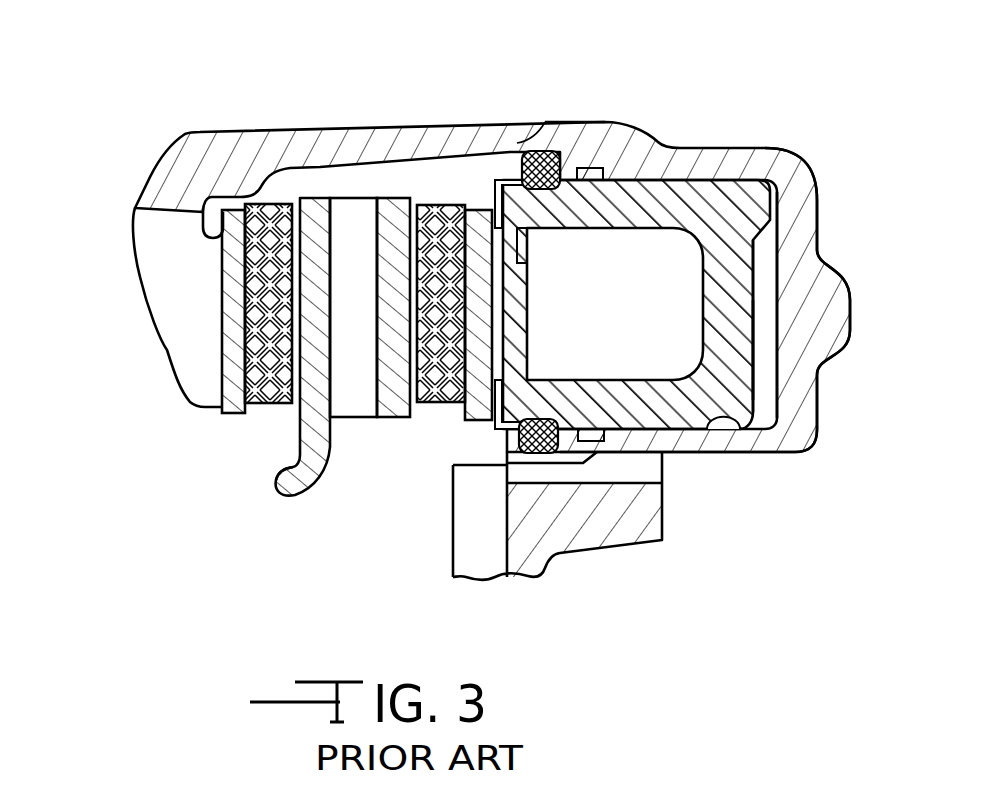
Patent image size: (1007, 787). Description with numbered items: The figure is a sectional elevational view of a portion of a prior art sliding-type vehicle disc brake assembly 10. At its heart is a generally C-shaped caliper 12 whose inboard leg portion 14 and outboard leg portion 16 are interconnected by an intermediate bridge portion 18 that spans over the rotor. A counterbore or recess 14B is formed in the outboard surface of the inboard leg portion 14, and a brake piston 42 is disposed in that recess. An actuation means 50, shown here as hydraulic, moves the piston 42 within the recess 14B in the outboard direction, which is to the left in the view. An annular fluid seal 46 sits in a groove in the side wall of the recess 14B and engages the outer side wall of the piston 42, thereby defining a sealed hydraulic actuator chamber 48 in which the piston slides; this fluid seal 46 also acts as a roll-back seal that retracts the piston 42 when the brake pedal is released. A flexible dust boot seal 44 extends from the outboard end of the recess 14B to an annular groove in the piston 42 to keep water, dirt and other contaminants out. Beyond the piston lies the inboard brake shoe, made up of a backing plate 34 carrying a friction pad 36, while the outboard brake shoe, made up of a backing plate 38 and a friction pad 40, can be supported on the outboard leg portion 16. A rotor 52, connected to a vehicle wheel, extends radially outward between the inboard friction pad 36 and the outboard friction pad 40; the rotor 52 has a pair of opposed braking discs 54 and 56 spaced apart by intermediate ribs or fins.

The disc brake assembly 10 is at (477, 292).
The caliper 12 is at (218, 131).
The inboard leg portion 14 is at (720, 167).
The counterbore or recess 14B is at (735, 431).
The outboard leg portion 16 is at (173, 313).
The intermediate bridge portion 18 is at (545, 122).
The inboard backing plate 34 is at (482, 142).
The inboard friction pad 36 is at (462, 204).
The outboard backing plate 38 is at (224, 413).
The outboard friction pad 40 is at (263, 410).
The brake piston 42 is at (694, 326).
The dust boot seal 44 is at (518, 446).
The annular fluid seal 46 is at (597, 453).
The sealed hydraulic actuator chamber 48 is at (763, 277).
The actuation means 50 is at (760, 244).
The rotor 52 is at (303, 492).
The braking disc 54 is at (393, 207).
The braking disc 56 is at (313, 207).